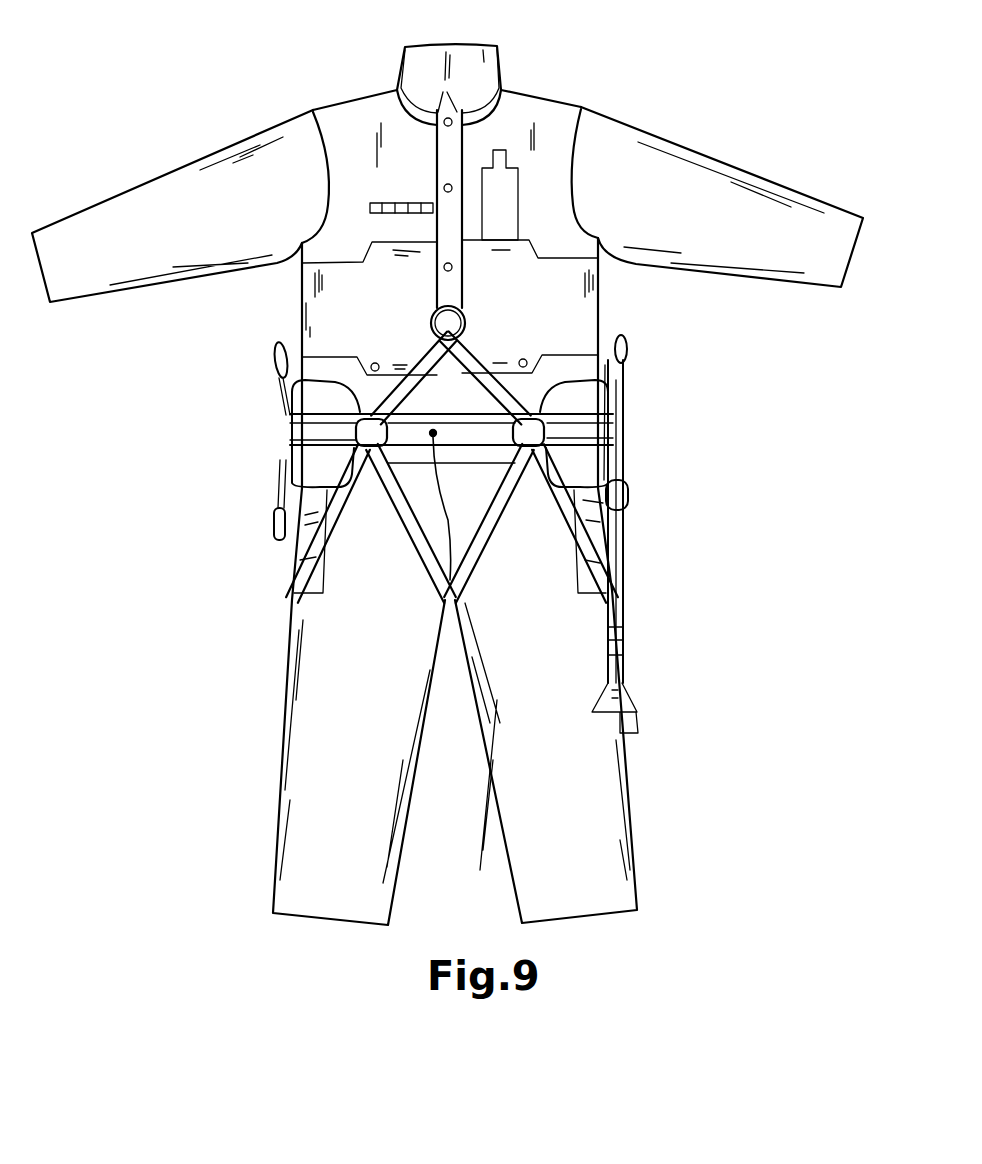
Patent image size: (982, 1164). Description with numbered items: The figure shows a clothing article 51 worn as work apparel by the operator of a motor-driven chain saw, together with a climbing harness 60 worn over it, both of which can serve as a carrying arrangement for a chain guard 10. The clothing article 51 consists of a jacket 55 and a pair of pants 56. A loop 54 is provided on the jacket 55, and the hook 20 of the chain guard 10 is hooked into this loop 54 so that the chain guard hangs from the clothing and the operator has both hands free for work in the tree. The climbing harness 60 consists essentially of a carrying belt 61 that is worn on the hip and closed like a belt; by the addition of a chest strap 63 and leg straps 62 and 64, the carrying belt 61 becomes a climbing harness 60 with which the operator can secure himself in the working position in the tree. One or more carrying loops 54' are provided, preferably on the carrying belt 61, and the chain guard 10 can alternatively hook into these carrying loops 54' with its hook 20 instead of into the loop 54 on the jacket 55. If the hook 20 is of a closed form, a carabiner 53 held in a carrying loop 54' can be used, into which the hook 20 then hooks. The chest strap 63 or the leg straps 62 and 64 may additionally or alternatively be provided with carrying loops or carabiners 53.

The chain guard 10 is at (628, 553).
The hook 20 is at (618, 440).
The clothing article 51 is at (586, 90).
The carabiner 53 is at (280, 540).
The loop 54 is at (645, 546).
The carrying loops 54' is at (454, 426).
The jacket 55 is at (322, 315).
The pair of pants 56 is at (308, 743).
The climbing harness 60 is at (558, 373).
The carrying belt 61 is at (432, 440).
The leg strap 62 is at (293, 597).
The chest strap 63 is at (420, 366).
The leg strap 64 is at (595, 583).